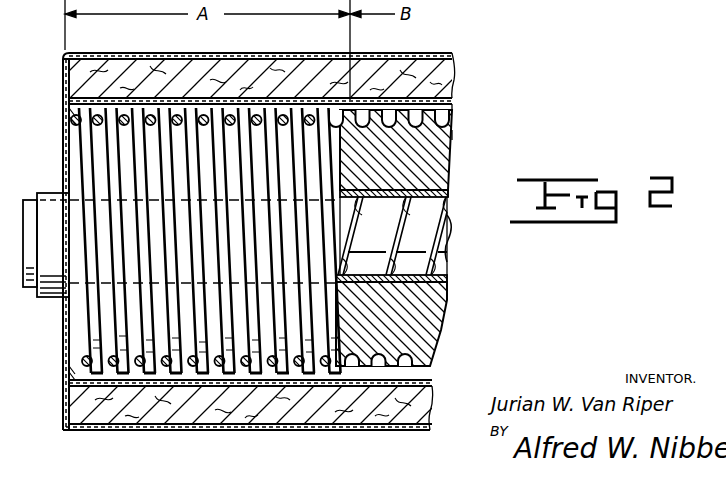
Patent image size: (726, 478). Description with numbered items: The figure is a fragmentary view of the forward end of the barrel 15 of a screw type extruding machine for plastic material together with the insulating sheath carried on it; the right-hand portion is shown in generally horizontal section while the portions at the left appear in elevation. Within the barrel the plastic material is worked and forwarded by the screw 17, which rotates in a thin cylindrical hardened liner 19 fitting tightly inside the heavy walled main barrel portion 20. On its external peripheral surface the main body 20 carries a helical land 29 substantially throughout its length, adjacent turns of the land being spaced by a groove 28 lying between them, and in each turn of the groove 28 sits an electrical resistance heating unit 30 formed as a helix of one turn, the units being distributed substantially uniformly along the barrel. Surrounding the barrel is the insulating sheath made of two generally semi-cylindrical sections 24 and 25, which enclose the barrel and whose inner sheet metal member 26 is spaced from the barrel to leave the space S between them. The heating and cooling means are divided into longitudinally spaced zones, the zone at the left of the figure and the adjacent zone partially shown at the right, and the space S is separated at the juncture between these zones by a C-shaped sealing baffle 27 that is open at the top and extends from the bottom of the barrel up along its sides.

The barrel 15 is at (456, 135).
The screw 17 is at (445, 232).
The thin cylindrical hardened liner 19 is at (448, 193).
The main barrel portion 20 is at (452, 172).
The semi-cylindrical section 24 is at (328, 100).
The semi-cylindrical section 25 is at (236, 398).
The inner sheet metal member 26 is at (222, 106).
The C-shaped sealing baffle 27 is at (352, 108).
The groove 28 is at (256, 108).
The helical land 29 is at (110, 112).
The electrical resistance heating unit 30 is at (176, 116).
The space S is at (66, 122).